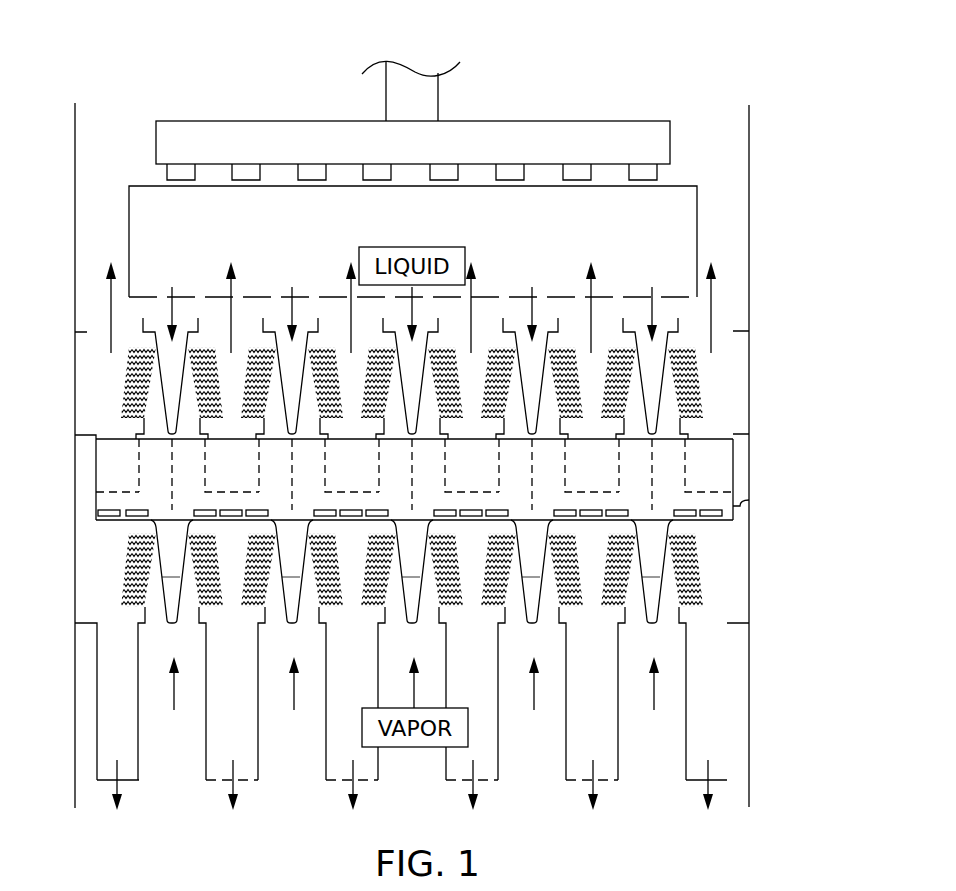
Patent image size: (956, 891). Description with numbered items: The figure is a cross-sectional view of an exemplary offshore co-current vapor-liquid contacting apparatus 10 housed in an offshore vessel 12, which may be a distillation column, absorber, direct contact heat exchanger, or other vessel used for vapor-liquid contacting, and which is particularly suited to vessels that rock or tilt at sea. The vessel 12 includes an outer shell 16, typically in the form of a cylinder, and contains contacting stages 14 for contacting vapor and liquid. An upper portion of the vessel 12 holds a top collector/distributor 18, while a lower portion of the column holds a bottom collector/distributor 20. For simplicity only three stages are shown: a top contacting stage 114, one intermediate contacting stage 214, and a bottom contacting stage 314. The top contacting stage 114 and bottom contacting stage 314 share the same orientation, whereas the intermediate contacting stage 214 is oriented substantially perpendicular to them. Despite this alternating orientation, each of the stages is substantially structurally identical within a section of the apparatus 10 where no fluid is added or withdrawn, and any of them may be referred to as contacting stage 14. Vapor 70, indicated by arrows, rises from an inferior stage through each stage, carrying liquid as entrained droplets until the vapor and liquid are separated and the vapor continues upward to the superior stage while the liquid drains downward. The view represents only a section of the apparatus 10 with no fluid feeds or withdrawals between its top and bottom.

The co-current vapor-liquid contacting apparatus 10 is at (756, 50).
The offshore vessel 12 is at (75, 756).
The contacting stage 14 is at (105, 578).
The outer shell 16 is at (750, 752).
The top collector/distributor 18 is at (170, 120).
The bottom collector/distributor 20 is at (613, 745).
The vapor 70 is at (292, 700).
The top contacting stage 114 is at (708, 388).
The intermediate contacting stage 214 is at (705, 472).
The bottom contacting stage 314 is at (705, 562).